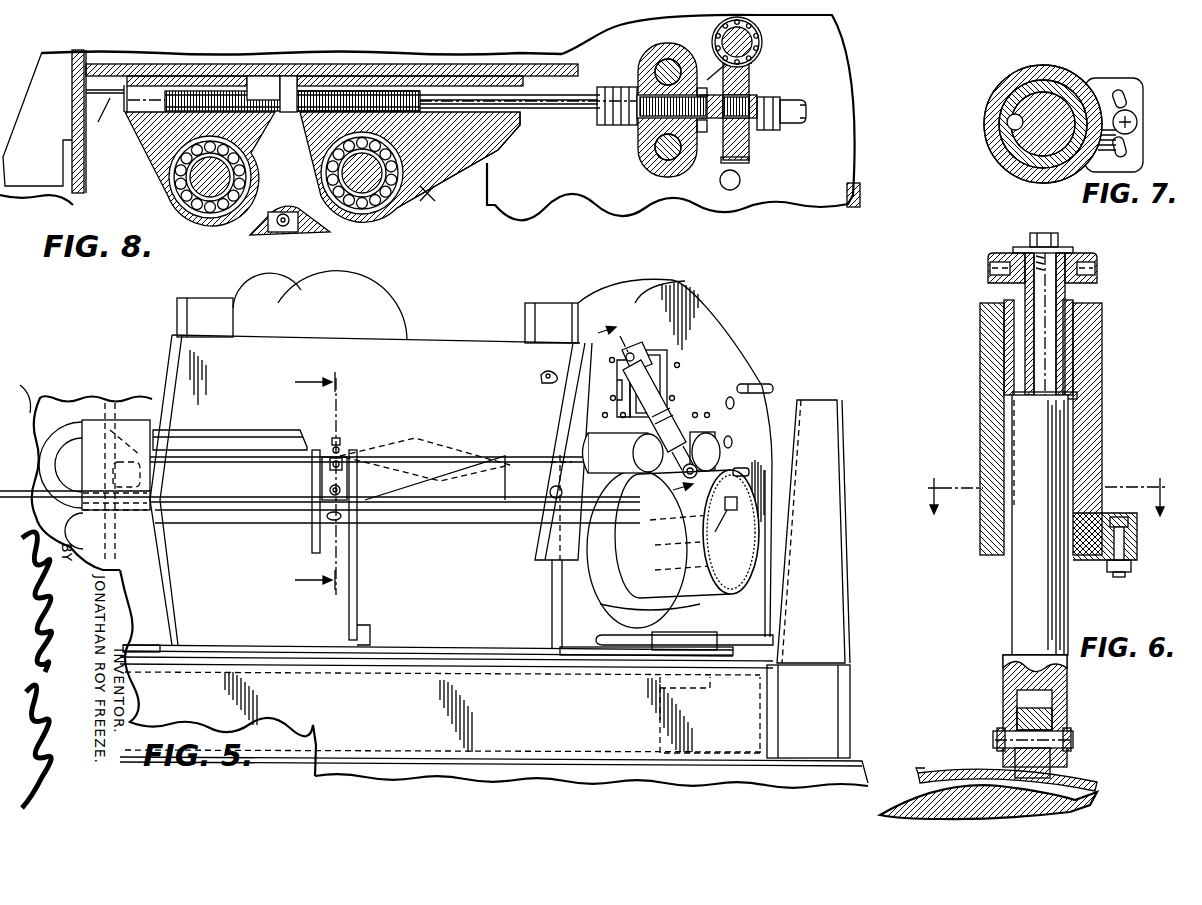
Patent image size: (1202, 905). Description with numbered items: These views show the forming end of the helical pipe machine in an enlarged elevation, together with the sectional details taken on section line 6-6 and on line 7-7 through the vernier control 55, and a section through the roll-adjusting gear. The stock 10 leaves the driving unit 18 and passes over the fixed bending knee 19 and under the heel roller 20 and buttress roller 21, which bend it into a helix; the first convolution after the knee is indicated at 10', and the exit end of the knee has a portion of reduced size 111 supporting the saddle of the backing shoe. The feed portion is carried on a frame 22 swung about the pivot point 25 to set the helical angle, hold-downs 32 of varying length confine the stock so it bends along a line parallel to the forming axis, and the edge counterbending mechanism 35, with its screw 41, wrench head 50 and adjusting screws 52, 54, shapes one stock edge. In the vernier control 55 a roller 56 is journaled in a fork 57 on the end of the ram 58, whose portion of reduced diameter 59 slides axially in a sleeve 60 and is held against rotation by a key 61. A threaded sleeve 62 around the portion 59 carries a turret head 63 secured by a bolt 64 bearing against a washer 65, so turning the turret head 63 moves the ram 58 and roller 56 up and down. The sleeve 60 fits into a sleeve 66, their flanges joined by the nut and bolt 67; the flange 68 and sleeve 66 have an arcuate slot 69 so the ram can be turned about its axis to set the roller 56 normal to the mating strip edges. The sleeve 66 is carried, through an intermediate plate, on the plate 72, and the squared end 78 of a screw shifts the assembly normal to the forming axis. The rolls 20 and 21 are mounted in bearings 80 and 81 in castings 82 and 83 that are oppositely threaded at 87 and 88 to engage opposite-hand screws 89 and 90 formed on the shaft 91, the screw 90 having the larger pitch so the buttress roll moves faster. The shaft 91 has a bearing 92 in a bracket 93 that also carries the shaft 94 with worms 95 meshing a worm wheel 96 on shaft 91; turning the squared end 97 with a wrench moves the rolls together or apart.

In FIG. 5, the section line 6- 6 is at (646, 412).
In FIG. 6, the section line 7- 7 is at (1045, 509).
In FIG. 6, the stock 10 is at (1006, 767).
In FIG. 6, the first convolution of the stock 10' is at (1007, 805).
In FIG. 5, the first convolution of the stock 10' is at (656, 605).
In FIG. 5, the driving unit 18 is at (35, 410).
In FIG. 8, the bending knee 19 is at (298, 230).
In FIG. 5, the bending knee 19 is at (742, 487).
In FIG. 8, the heel roller 20 is at (135, 190).
In FIG. 5, the heel roller 20 is at (640, 450).
In FIG. 8, the buttress roller 21 is at (438, 201).
In FIG. 5, the buttress roller 21 is at (712, 437).
In FIG. 5, the frame 22 is at (437, 648).
In FIG. 5, the pivot point 25 is at (700, 632).
In FIG. 5, the hold-downs 32 is at (462, 475).
In FIG. 5, the edge counterbending mechanism 35 is at (324, 448).
In FIG. 5, the screw 41 is at (355, 518).
In FIG. 5, the head 50 is at (330, 516).
In FIG. 5, the screw 52 is at (339, 437).
In FIG. 5, the screw 54 is at (338, 462).
In FIG. 5, the vernier control 55 is at (665, 393).
In FIG. 6, the roller 56 is at (1070, 765).
In FIG. 5, the roller 56 is at (660, 474).
In FIG. 6, the fork 57 is at (1070, 717).
In FIG. 7, the ram 58 is at (1002, 143).
In FIG. 6, the ram 58 is at (1068, 612).
In FIG. 6, the portion of reduced diameter 59 is at (1073, 300).
In FIG. 7, the sleeve 60 is at (1022, 165).
In FIG. 6, the sleeve 60 is at (1075, 440).
In FIG. 7, the key 61 is at (1013, 122).
In FIG. 6, the key 61 is at (1010, 458).
In FIG. 6, the threaded sleeve 62 is at (1010, 300).
In FIG. 6, the turret head 63 is at (988, 253).
In FIG. 6, the bolt 64 is at (1060, 237).
In FIG. 6, the washer 65 is at (1075, 250).
In FIG. 7, the sleeve 66 is at (1037, 182).
In FIG. 6, the sleeve 66 is at (1103, 372).
In FIG. 5, the sleeve 66 is at (665, 413).
In FIG. 6, the nut and bolt 67 is at (1122, 518).
In FIG. 6, the flange 68 is at (1130, 566).
In FIG. 7, the arcuate slot 69 is at (1127, 105).
In FIG. 5, the plate 72 is at (673, 352).
In FIG. 5, the squared end 78 is at (548, 375).
In FIG. 8, the bearing 80 is at (222, 212).
In FIG. 8, the bearing 81 is at (380, 220).
In FIG. 8, the casting 82 is at (128, 150).
In FIG. 8, the casting 83 is at (497, 135).
In FIG. 8, the threaded portion 87 is at (255, 100).
In FIG. 8, the threaded portion 88 is at (306, 88).
In FIG. 8, the screw 89 is at (215, 95).
In FIG. 8, the screw 90 is at (338, 90).
In FIG. 8, the shaft 91 is at (545, 120).
In FIG. 8, the bearing 92 is at (640, 142).
In FIG. 8, the bracket 93 is at (678, 172).
In FIG. 8, the shaft 94 is at (757, 36).
In FIG. 8, the worms 95 is at (745, 70).
In FIG. 8, the worm wheel 96 is at (750, 160).
In FIG. 5, the squared end 97 is at (770, 384).
In FIG. 5, the portion of reduced size 111 is at (730, 525).